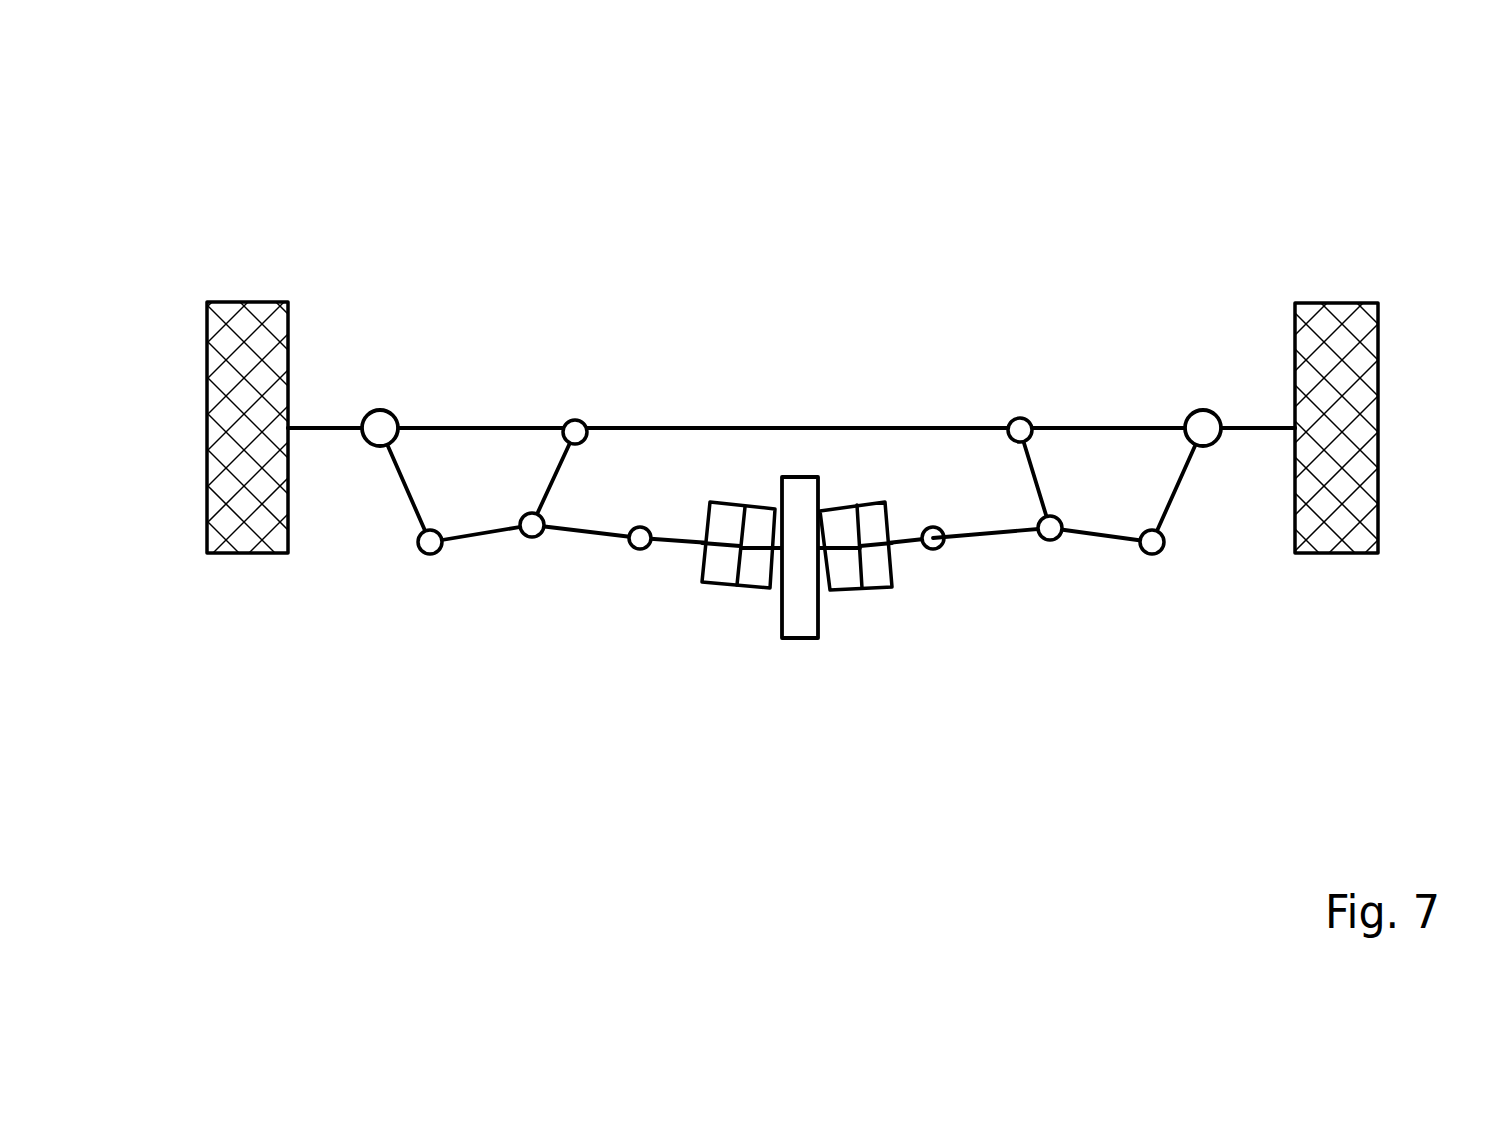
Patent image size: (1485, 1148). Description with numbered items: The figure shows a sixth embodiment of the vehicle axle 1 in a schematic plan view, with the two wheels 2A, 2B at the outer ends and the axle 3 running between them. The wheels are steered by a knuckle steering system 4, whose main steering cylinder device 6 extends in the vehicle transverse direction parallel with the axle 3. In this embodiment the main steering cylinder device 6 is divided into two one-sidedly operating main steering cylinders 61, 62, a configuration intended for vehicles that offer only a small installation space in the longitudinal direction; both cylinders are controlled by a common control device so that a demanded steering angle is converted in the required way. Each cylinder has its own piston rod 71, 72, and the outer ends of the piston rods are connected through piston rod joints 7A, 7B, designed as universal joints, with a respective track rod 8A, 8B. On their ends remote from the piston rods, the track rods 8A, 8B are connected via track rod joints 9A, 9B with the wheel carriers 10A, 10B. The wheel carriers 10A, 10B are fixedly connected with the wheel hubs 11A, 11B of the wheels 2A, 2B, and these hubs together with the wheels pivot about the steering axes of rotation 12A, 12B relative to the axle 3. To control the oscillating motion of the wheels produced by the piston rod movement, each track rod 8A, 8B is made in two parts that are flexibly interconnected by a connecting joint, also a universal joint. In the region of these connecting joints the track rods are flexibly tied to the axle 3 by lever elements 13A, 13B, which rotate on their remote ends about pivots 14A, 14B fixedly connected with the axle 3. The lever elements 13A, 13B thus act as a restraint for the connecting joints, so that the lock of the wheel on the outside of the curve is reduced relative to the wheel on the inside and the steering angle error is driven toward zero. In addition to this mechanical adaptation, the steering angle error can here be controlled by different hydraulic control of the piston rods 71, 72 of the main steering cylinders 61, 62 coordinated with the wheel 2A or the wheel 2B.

The vehicle axle 1 is at (789, 430).
The wheel 2A is at (238, 402).
The wheel 2B is at (1347, 413).
The axle 3 is at (853, 425).
The knuckle steering system 4 is at (646, 578).
The main steering cylinder device 6 is at (798, 651).
The main steering cylinder 61 is at (717, 573).
The main steering cylinder 62 is at (888, 583).
The piston rod 71 is at (675, 547).
The piston rod 72 is at (915, 546).
The piston rod joint 7A is at (628, 545).
The piston rod joint 7B is at (933, 549).
The track rod 8A is at (601, 524).
The track rod 8B is at (996, 499).
The track rod joint 9A is at (420, 542).
The track rod joint 9B is at (1160, 544).
The wheel carrier 10A is at (405, 492).
The wheel carrier 10B is at (1177, 490).
The wheel hub 11A is at (300, 427).
The wheel hub 11B is at (1245, 427).
The steering axis of rotation 12A is at (376, 416).
The steering axis of rotation 12B is at (1197, 418).
The lever element 13A is at (557, 485).
The lever element 13B is at (1032, 473).
The pivot 14A is at (582, 422).
The pivot 14B is at (1018, 418).